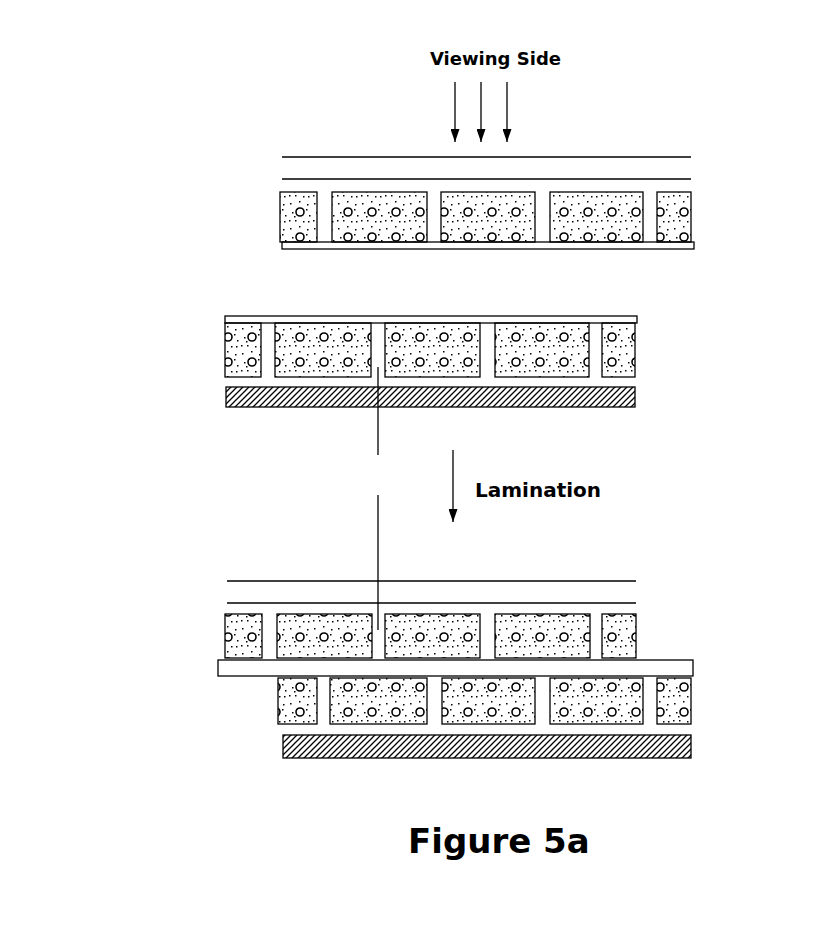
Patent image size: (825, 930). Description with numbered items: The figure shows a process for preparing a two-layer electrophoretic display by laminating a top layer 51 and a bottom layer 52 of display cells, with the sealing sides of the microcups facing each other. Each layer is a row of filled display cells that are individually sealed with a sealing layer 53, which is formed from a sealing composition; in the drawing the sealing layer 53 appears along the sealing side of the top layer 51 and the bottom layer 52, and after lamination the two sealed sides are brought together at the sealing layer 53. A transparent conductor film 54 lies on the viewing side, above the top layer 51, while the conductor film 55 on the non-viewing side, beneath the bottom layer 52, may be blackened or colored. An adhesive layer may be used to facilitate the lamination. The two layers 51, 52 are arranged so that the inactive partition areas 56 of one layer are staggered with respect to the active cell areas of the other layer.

The top layer 51 is at (730, 215).
The bottom layer 52 is at (667, 359).
The sealing layer 53 is at (280, 249).
The conductor film on the viewing side 54 is at (326, 157).
The conductor film on the non-viewing side 55 is at (230, 403).
The inactive partition areas 56 is at (382, 498).